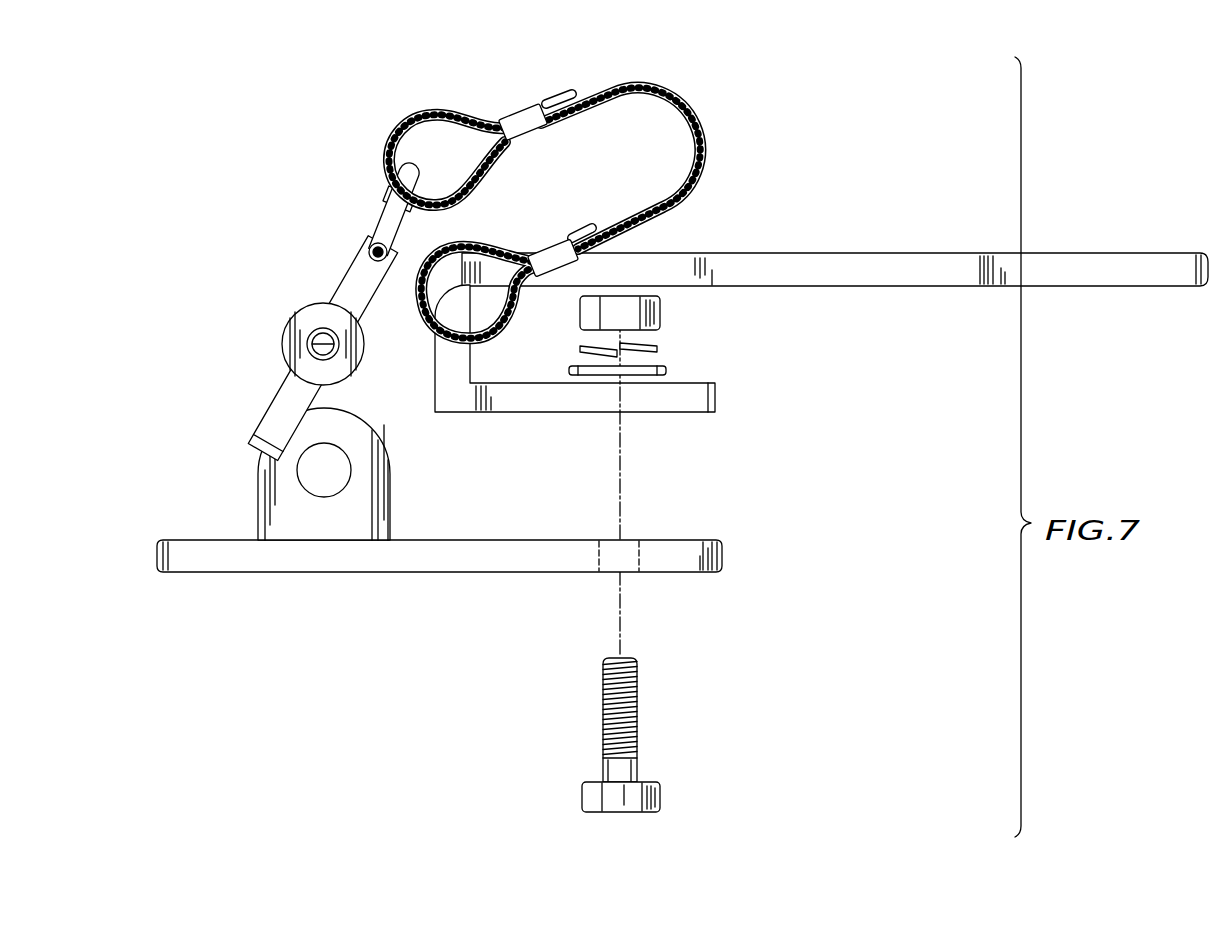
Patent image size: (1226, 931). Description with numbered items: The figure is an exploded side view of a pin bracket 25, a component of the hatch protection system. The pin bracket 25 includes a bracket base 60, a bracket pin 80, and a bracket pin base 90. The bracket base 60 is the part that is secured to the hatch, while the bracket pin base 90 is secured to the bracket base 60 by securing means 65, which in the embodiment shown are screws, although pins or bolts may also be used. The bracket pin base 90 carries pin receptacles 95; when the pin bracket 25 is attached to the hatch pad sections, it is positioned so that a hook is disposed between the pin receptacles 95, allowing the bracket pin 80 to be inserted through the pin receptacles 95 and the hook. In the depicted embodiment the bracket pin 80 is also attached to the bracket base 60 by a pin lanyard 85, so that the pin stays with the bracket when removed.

The pin bracket 25 is at (788, 466).
The bracket base 60 is at (852, 252).
The securing means 65 is at (678, 348).
The bracket pin 80 is at (355, 253).
The pin lanyard 85 is at (592, 103).
The bracket pin base 90 is at (537, 553).
The pin receptacles 95 is at (378, 495).